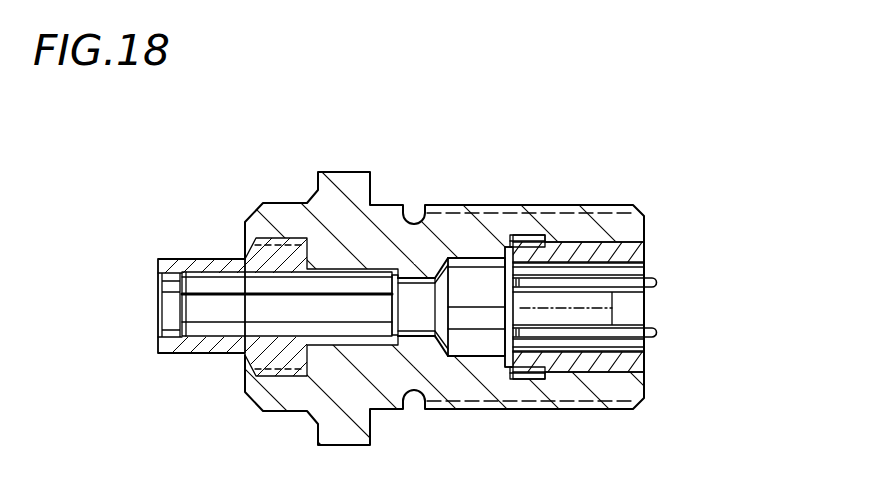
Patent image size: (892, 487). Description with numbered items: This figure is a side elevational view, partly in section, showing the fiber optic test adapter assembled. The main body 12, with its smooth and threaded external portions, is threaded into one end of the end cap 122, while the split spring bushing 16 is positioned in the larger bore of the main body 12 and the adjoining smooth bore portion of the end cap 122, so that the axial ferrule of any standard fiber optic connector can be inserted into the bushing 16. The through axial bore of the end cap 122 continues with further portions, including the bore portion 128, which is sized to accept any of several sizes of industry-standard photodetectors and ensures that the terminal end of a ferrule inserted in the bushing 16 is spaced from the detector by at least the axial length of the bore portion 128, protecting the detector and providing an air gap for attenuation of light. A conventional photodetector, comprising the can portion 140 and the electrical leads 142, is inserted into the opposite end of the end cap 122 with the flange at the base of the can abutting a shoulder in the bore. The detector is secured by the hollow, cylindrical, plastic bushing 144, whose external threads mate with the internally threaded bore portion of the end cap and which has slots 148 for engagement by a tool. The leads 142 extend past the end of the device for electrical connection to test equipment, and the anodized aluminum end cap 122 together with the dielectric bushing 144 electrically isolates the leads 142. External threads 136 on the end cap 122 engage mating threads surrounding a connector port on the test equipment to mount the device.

The main body 12 is at (212, 259).
The bushing 16 is at (217, 327).
The end cap 122 is at (342, 184).
The bore portion 128 is at (413, 284).
The external threads 136 is at (582, 205).
The can portion 140 is at (481, 268).
The electrical leads 142 is at (657, 337).
The bushing 144 is at (645, 250).
The slots 148 is at (627, 311).